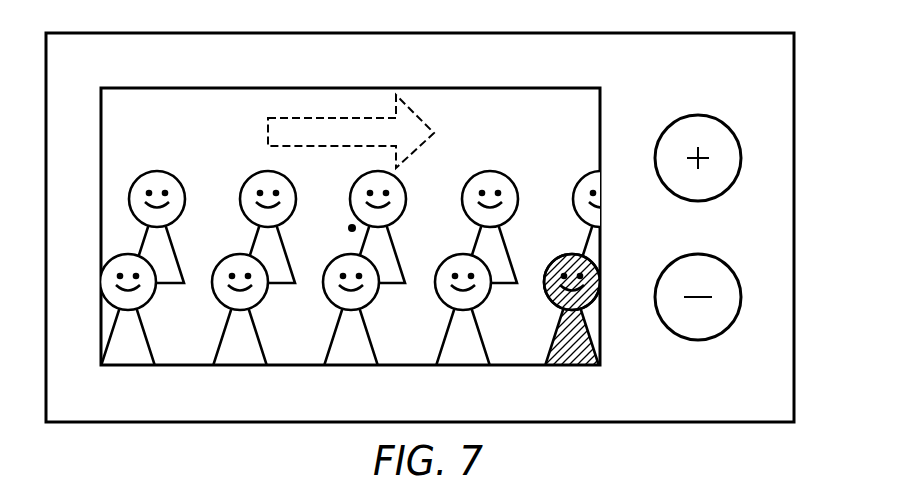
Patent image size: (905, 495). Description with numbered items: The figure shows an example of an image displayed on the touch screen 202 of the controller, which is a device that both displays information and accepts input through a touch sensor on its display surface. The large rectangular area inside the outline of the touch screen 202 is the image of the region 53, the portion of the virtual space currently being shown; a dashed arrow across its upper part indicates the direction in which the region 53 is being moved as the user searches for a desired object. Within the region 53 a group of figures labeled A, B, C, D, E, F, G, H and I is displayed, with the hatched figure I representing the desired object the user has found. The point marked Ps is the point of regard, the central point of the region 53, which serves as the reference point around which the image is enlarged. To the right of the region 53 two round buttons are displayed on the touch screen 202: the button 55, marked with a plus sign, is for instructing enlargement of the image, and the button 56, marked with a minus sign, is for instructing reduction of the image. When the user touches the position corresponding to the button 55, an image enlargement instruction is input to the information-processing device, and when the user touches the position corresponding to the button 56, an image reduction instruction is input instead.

The touch screen 202 is at (796, 398).
The region 53 is at (364, 202).
The button for instructing enlargement 55 is at (705, 120).
The button for instructing reduction 56 is at (700, 258).
The point of regard Ps is at (348, 229).
The person A is at (378, 227).
The person B is at (268, 227).
The person C is at (490, 227).
The person D is at (157, 227).
The person E is at (351, 310).
The person F is at (240, 310).
The person G is at (463, 310).
The person H is at (128, 310).
The person I (selected) I is at (572, 310).